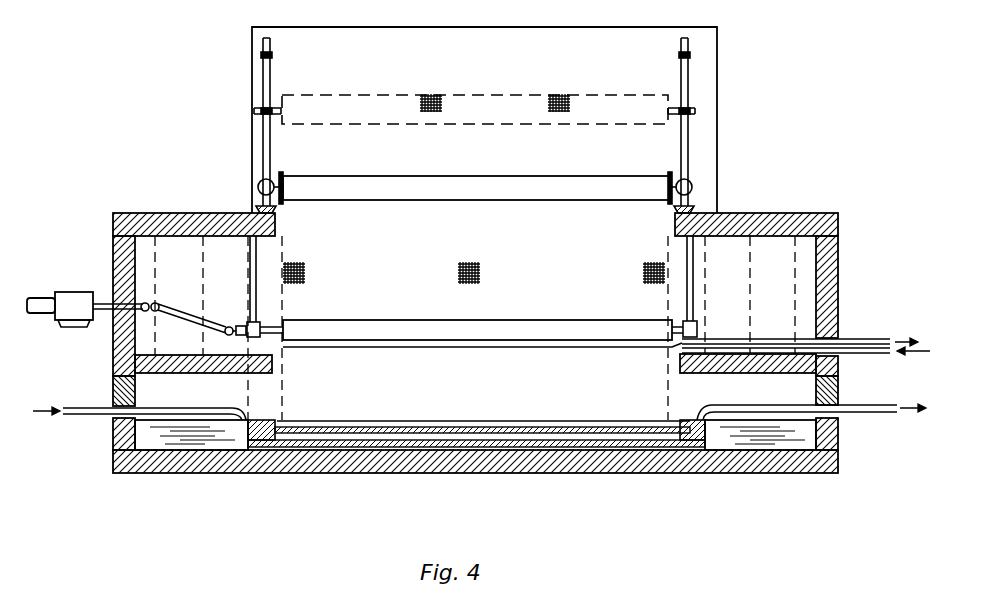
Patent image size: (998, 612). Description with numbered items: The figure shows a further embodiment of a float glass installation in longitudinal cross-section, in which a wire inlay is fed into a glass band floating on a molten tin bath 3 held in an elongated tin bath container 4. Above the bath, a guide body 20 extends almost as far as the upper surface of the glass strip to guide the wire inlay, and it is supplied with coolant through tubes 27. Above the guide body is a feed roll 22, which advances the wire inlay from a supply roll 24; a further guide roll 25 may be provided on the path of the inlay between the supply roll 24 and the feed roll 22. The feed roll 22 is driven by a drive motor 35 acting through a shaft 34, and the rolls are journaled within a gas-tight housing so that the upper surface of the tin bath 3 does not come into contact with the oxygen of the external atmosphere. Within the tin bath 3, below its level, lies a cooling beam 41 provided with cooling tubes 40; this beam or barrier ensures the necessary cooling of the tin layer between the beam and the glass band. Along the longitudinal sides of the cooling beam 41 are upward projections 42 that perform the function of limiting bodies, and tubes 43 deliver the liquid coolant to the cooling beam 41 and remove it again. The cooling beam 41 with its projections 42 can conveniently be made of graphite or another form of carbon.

The molten tin bath 3 is at (212, 440).
The tin bath container 4 is at (318, 462).
The guide body 20 is at (489, 403).
The feed roll 22 is at (398, 328).
The supply roll 24 is at (503, 104).
The guide roll 25 is at (470, 186).
The coolant tube 27 is at (870, 340).
The shaft 34 is at (177, 316).
The drive motor 35 is at (75, 297).
The cooling tube 40 is at (668, 448).
The cooling beam 41 is at (584, 440).
The upward projection 42 is at (264, 420).
The tube 43 is at (80, 408).